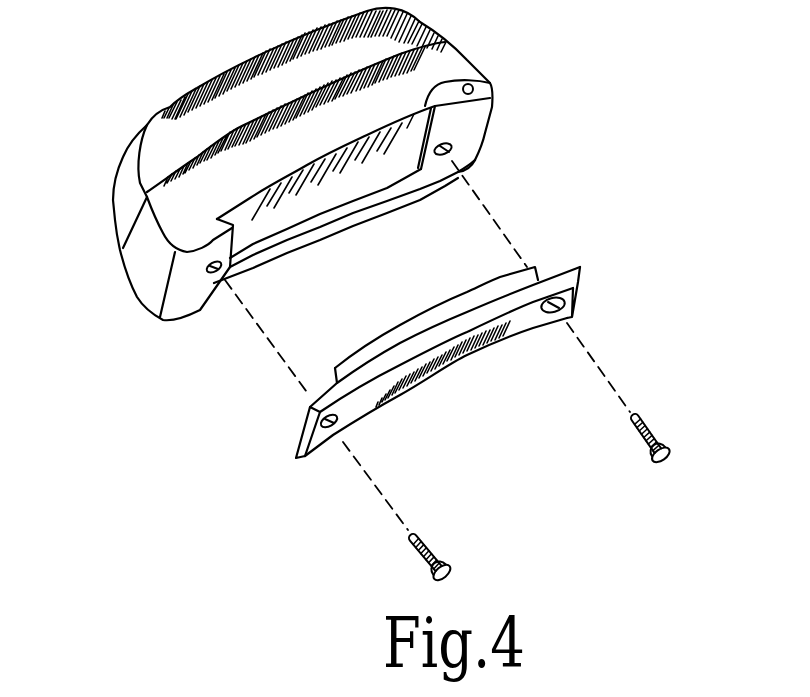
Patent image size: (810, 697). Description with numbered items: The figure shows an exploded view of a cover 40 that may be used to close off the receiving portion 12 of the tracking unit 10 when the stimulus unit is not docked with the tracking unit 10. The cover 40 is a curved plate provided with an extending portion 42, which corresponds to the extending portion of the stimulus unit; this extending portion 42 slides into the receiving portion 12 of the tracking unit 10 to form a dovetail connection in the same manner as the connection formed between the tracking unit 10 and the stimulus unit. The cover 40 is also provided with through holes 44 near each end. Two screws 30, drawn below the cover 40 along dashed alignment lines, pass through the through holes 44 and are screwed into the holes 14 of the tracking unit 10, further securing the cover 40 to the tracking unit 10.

The tracking unit 10 is at (120, 170).
The receiving portion 12 is at (490, 83).
The holes 14 is at (450, 147).
The screws 30 is at (672, 461).
The cover 40 is at (582, 267).
The extending portion 42 is at (508, 277).
The through holes 44 is at (567, 302).